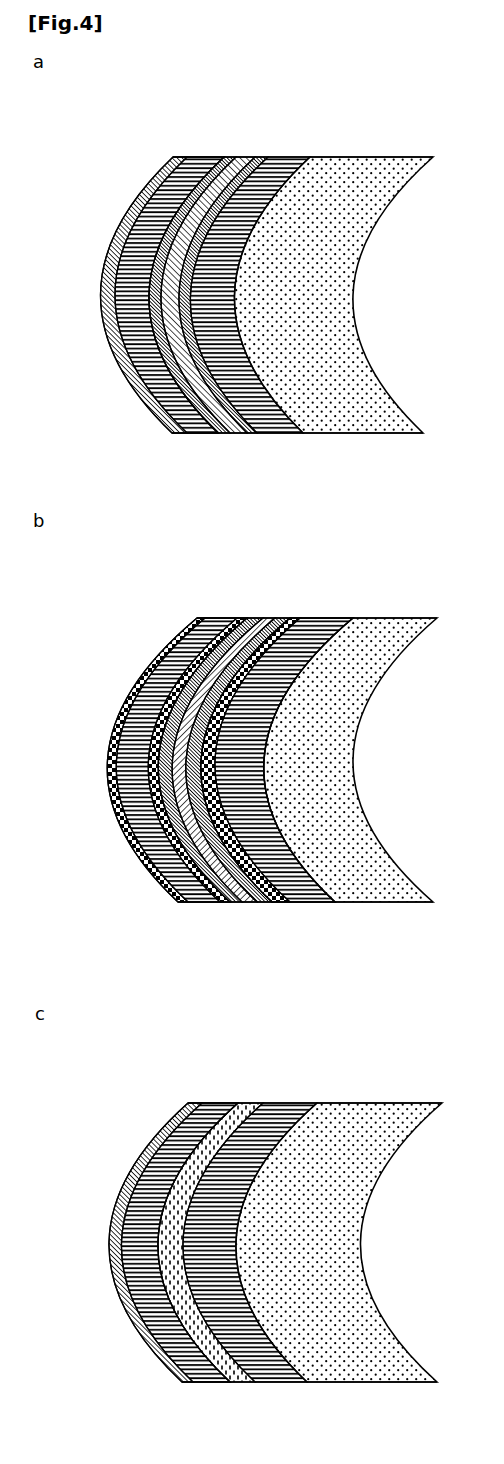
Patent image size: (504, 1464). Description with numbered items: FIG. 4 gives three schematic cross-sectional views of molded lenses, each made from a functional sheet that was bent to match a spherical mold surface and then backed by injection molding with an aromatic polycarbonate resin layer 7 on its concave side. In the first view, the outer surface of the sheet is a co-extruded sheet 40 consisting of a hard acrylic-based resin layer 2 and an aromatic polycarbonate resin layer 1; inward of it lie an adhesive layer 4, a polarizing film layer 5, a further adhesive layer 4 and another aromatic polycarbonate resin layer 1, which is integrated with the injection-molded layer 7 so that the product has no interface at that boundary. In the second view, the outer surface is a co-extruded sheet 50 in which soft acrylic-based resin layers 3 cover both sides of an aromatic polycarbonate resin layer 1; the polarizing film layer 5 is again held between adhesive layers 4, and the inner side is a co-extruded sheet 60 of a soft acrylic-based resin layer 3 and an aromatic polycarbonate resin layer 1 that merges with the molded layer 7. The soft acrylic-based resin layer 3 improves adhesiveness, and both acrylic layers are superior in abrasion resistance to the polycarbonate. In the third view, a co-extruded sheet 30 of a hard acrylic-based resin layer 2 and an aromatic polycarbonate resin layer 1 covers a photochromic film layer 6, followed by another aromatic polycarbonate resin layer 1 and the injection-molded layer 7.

The aromatic polycarbonate resin layer 1 is at (205, 157).
The hard acrylic-based resin layer 2 is at (180, 157).
The soft acrylic-based resin layer 3 is at (197, 618).
The adhesive layer 4 is at (228, 157).
The polarizing film layer 5 is at (248, 157).
The photochromic film layer 6 is at (257, 1103).
The aromatic polycarbonate resin layer obtained as a result of injection molding 7 is at (360, 157).
The co-extruded sheet 30 is at (163, 1020).
The co-extruded sheet 40 is at (172, 70).
The co-extruded sheet 50 is at (213, 533).
The co-extruded sheet 60 is at (345, 535).